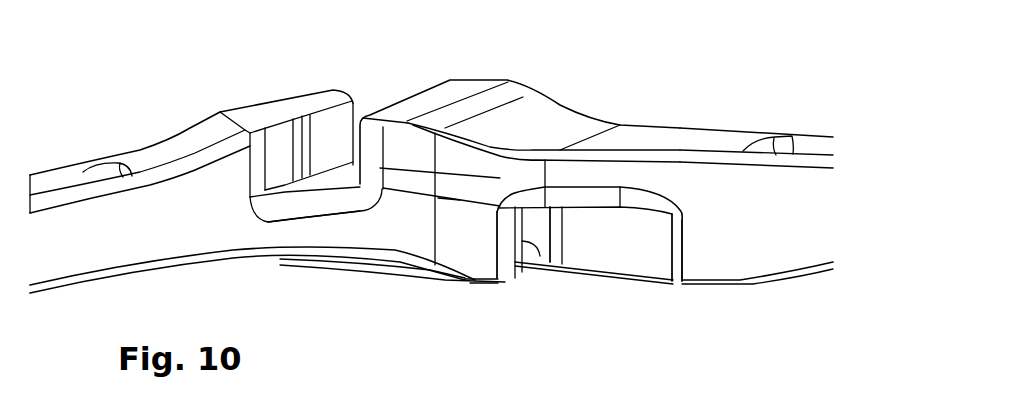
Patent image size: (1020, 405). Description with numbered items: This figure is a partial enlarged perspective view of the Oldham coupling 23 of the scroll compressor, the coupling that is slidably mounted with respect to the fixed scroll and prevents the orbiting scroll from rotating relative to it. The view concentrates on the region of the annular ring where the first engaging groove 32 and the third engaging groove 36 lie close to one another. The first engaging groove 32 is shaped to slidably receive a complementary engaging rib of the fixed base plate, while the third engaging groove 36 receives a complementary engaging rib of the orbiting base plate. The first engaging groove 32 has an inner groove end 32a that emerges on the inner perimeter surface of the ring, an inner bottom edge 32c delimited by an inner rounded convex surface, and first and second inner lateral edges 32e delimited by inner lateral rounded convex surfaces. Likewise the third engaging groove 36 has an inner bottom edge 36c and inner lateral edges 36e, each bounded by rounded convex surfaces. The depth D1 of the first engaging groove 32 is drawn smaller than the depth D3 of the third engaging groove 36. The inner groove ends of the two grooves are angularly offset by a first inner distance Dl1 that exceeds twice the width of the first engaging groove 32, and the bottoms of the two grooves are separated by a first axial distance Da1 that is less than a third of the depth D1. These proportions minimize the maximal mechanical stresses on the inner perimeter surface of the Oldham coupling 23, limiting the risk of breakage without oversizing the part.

The Oldham coupling 23 is at (715, 148).
The first engaging groove 32 is at (366, 102).
The inner groove end 32a is at (323, 203).
The inner bottom edge 32c is at (302, 215).
The inner lateral edge 32e is at (257, 172).
The third engaging groove 36 is at (627, 289).
The inner bottom edge 36c is at (505, 262).
The inner lateral edge 36e is at (678, 266).
The depth of the first engaging groove D1 is at (326, 145).
The first inner distance Dl1 is at (440, 164).
The first axial distance Da1 is at (453, 182).
The depth of the third engaging groove D3 is at (533, 263).